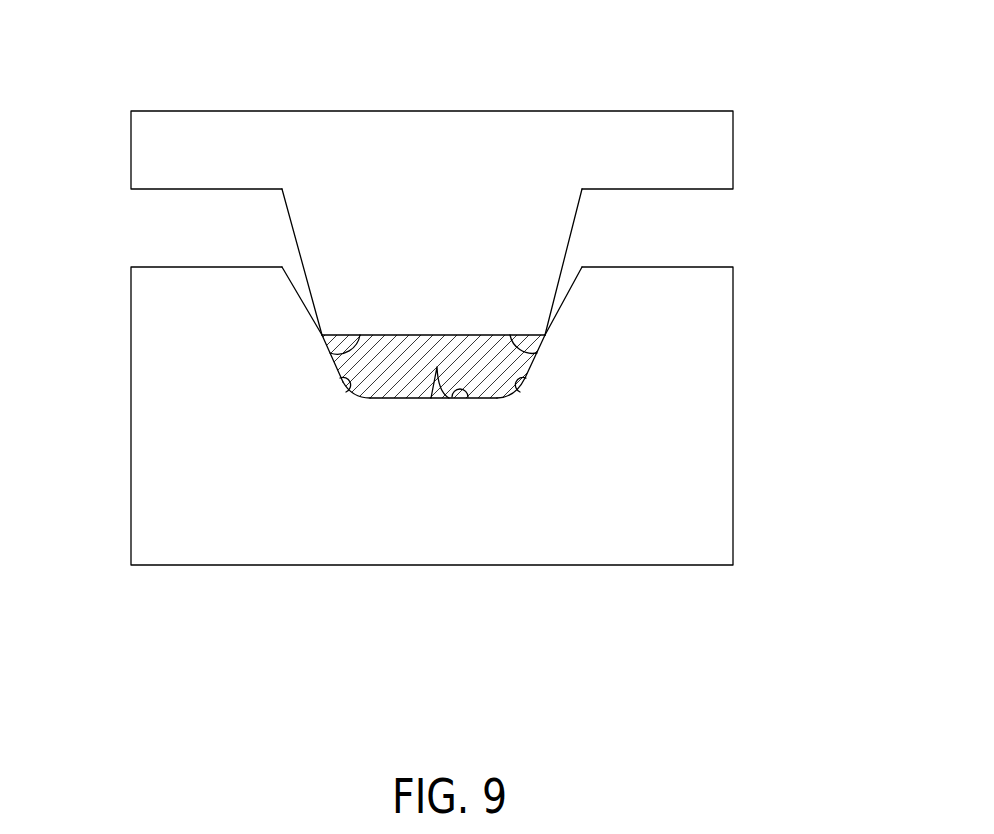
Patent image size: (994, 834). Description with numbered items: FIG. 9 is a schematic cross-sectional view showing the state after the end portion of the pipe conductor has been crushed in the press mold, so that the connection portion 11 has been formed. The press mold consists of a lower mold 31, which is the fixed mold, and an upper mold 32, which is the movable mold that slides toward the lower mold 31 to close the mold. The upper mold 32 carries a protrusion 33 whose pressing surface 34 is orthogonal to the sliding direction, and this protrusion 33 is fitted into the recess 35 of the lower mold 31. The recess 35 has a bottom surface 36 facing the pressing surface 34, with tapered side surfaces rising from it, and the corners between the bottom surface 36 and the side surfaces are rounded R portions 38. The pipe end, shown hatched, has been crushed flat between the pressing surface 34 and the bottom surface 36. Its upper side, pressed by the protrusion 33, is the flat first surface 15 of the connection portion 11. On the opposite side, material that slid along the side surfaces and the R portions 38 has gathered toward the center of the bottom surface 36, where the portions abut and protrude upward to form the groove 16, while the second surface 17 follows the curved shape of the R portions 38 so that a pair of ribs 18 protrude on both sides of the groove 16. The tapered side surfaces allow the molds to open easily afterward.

The connection portion 11 is at (397, 362).
The first surface 15 is at (487, 335).
The groove 16 is at (436, 370).
The second surface 17 is at (415, 386).
The rib 18 is at (391, 386).
The lower mold 31 is at (169, 550).
The upper mold 32 is at (207, 127).
The protrusion 33 is at (533, 238).
The pressing surface 34 is at (330, 353).
The recess 35 is at (572, 285).
The bottom surface 36 is at (472, 390).
The R portion 38 is at (342, 380).